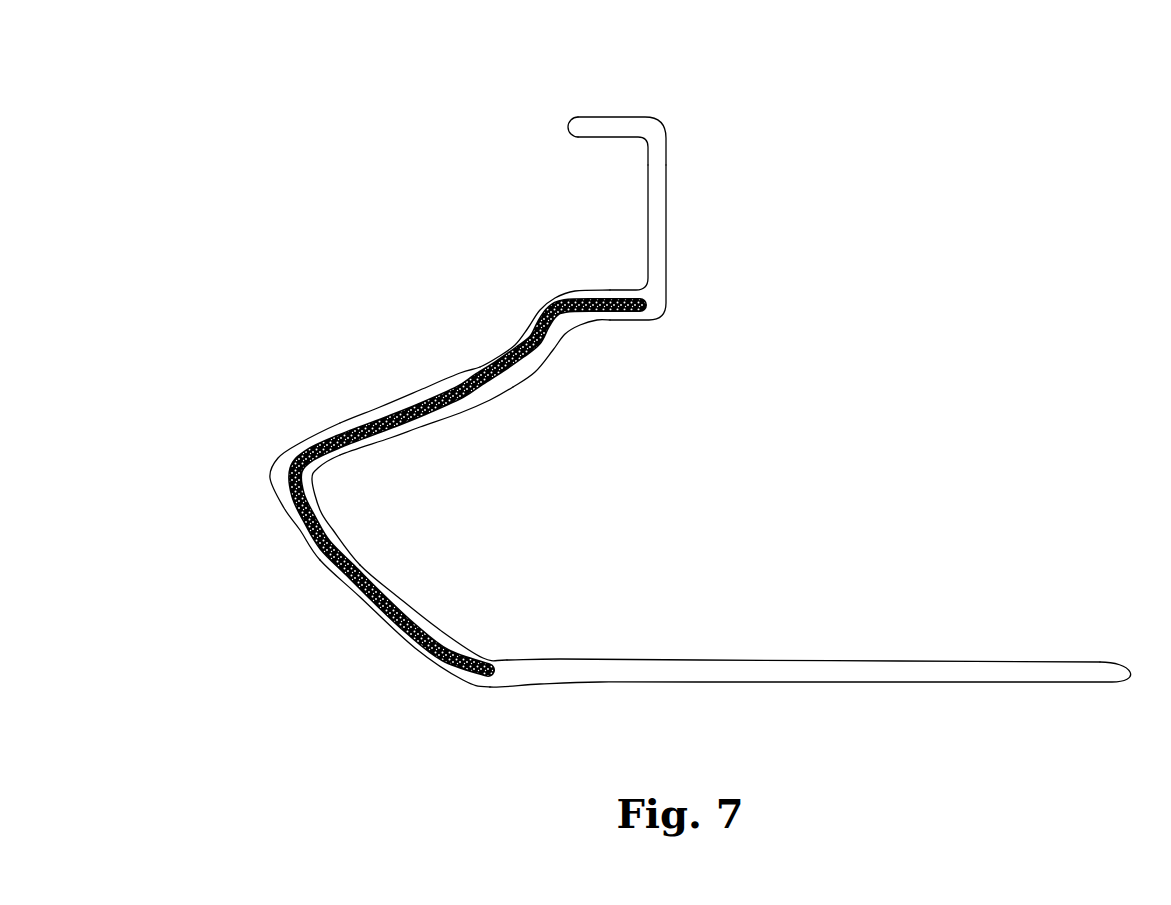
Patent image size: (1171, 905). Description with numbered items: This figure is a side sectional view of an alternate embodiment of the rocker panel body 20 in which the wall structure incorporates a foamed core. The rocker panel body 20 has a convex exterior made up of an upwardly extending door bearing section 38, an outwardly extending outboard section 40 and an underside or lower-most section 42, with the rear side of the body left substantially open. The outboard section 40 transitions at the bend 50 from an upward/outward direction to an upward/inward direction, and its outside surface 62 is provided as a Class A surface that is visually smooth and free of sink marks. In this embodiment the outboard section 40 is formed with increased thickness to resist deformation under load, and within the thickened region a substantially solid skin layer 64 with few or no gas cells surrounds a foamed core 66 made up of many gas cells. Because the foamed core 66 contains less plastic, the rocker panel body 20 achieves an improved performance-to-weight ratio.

The rocker panel body 20 is at (657, 122).
The door bearing section 38 is at (648, 203).
The skin layer 64 is at (547, 308).
The outside surface 62 is at (460, 377).
The foamed core 66 is at (610, 320).
The bend 50 is at (280, 467).
The outboard section 40 is at (367, 610).
The lower-most section 42 is at (925, 675).